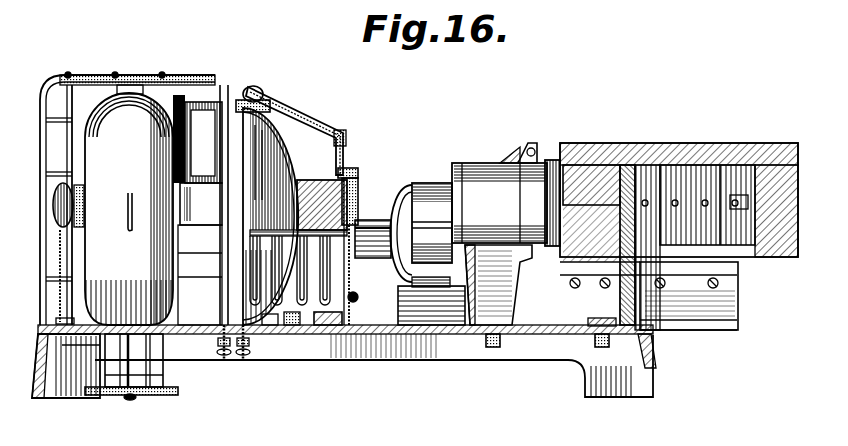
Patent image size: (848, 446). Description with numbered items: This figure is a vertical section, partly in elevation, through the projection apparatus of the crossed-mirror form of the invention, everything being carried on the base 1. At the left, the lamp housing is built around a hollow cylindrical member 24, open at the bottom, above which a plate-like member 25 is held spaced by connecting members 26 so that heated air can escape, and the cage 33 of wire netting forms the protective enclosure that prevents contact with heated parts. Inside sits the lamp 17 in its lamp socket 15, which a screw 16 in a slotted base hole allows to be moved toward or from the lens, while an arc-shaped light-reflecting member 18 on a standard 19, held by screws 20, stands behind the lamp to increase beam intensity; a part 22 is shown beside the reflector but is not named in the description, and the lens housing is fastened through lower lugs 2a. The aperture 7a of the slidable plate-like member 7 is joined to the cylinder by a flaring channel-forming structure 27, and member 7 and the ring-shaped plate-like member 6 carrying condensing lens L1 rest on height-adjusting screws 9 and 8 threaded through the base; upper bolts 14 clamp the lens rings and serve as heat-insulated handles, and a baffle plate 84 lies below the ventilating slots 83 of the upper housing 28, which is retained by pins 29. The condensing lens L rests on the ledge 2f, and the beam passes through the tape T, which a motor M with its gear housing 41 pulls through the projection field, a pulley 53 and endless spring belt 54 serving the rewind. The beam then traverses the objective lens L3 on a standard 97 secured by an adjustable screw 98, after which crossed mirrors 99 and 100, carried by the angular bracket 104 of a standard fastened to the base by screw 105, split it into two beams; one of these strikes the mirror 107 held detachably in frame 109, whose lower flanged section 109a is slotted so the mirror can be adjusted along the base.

The base 1 is at (385, 340).
The lower lugs 2a is at (327, 334).
The ledge or flange 2f is at (358, 283).
The plate-like member 6 is at (241, 100).
The plate-like member 7 is at (224, 84).
The elongated aperture 7a is at (228, 210).
The screws 8 is at (243, 363).
The screws 9 is at (227, 363).
The upper bolts 14 is at (260, 105).
The lamp socket 15 is at (143, 355).
The screw 16 is at (133, 398).
The source of light 17 is at (143, 130).
The light-reflecting member 18 is at (64, 188).
The standard 19 is at (58, 286).
The screws 20 is at (80, 345).
The valve 22 is at (57, 204).
The hollow cylindrical member 24 is at (73, 110).
The plate-like member 25 is at (100, 75).
The connecting members 26 is at (133, 100).
The channel-forming structure 27 is at (195, 232).
The upper housing 28 is at (340, 130).
The pins 29 is at (353, 170).
The cage 33 is at (68, 73).
The gear housing 41 is at (367, 246).
The pulley 53 is at (355, 300).
The endless spring belt 54 is at (303, 303).
The apertures or slots 83 is at (278, 278).
The plate 84 is at (303, 112).
The standard 97 is at (482, 300).
The screw 98 is at (493, 348).
The mirror 99 is at (587, 177).
The mirror 100 is at (621, 222).
The angular bracket 104 is at (637, 183).
The screw 105 is at (600, 348).
The mirror 107 is at (728, 155).
The frame 109 is at (757, 258).
The lower flanged section 109a is at (724, 290).
The condensing lens L is at (320, 187).
The condensing lens L1 is at (260, 153).
The objective lens L3 is at (477, 177).
The motor M is at (430, 200).
The tape T is at (358, 198).